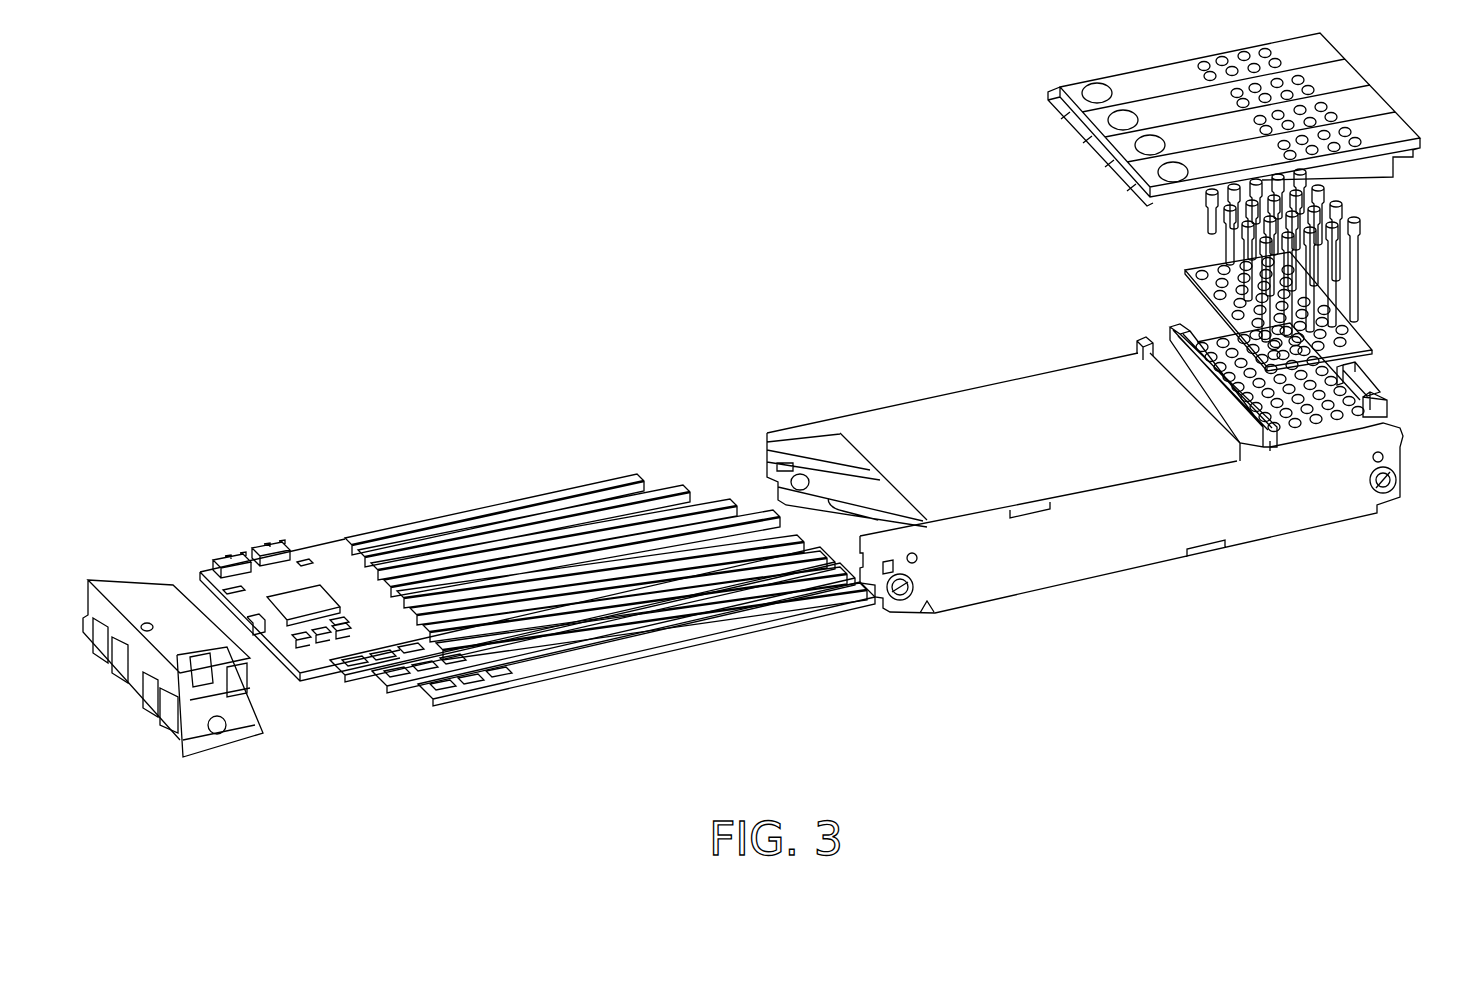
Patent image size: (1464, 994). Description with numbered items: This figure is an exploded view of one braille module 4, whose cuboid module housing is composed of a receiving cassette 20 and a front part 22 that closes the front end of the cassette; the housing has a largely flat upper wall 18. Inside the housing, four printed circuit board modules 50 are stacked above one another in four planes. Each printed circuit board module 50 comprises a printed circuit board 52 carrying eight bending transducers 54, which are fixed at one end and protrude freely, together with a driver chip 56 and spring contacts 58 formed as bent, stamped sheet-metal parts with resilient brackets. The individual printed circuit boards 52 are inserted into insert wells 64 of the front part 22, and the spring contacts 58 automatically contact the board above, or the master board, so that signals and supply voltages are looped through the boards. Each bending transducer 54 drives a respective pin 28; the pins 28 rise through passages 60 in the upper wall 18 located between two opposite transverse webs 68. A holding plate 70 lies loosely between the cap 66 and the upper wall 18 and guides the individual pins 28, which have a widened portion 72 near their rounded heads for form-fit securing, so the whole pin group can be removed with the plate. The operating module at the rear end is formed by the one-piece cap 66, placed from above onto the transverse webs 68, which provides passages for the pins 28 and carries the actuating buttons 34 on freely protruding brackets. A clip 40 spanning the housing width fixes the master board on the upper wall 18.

The module 4 is at (155, 124).
The upper wall 18 is at (877, 428).
The receiving cassette 20 is at (1230, 502).
The front part 22 is at (143, 622).
The pins 28 is at (1354, 292).
The actuating button 34 is at (1094, 90).
The clip 40 is at (1141, 344).
The printed circuit board module 50 is at (510, 521).
The printed circuit board 52 is at (476, 706).
The bending transducers 54 is at (663, 653).
The driver chip 56 is at (307, 592).
The spring contacts 58 is at (222, 558).
The passages 60 is at (1384, 497).
The insert wells 64 is at (262, 682).
The cap 66 is at (1377, 141).
The transverse webs 68 is at (1178, 328).
The holding plate 70 is at (1364, 351).
The widened portion 72 is at (1362, 233).